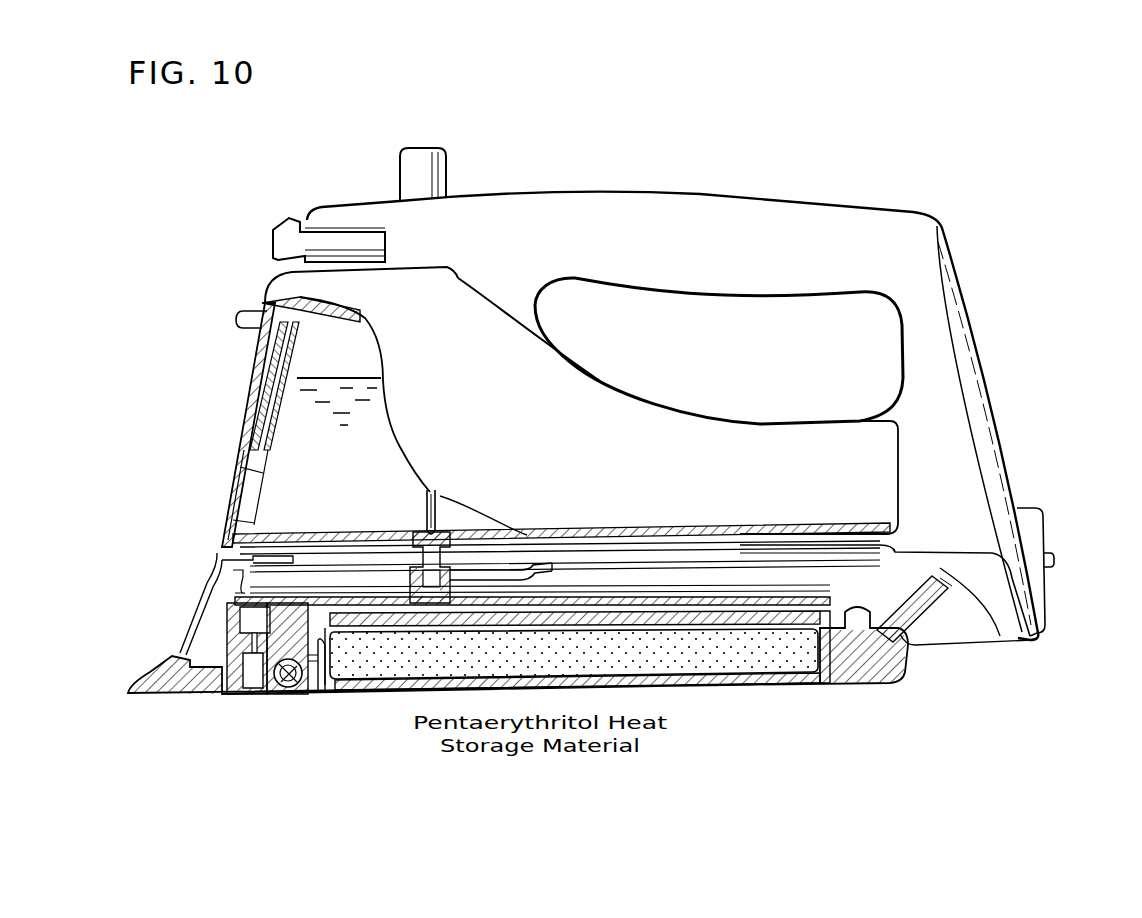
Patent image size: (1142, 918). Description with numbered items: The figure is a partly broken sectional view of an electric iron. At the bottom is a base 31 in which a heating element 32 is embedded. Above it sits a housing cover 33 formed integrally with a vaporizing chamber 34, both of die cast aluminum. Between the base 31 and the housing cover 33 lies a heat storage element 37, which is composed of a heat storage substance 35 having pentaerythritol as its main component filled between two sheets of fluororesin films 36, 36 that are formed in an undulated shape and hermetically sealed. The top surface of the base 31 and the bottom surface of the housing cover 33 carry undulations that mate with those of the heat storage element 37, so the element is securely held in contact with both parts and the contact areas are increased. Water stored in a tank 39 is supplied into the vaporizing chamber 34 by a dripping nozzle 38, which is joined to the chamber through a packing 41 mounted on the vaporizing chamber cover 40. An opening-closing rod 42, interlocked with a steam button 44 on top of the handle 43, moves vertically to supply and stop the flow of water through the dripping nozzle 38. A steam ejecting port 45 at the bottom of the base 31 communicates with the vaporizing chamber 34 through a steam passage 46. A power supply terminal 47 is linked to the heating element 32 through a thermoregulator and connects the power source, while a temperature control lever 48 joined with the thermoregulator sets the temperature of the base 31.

The base 31 is at (186, 700).
The heating element 32 is at (283, 692).
The housing cover 33 is at (322, 696).
The vaporizing chamber 34 is at (567, 600).
The heat storage substance 35 is at (732, 665).
The fluororesin films 36 is at (747, 610).
The heat storage element 37 is at (802, 742).
The dripping nozzle 38 is at (440, 548).
The tank 39 is at (262, 472).
The vaporizing chamber cover 40 is at (667, 590).
The packing 41 is at (463, 568).
The opening-closing rod 42 is at (426, 522).
The handle 43 is at (710, 208).
The steam button 44 is at (445, 158).
The steam ejecting port 45 is at (253, 697).
The steam passage 46 is at (218, 648).
The power supply terminal 47 is at (1056, 560).
The temperature control lever 48 is at (285, 240).